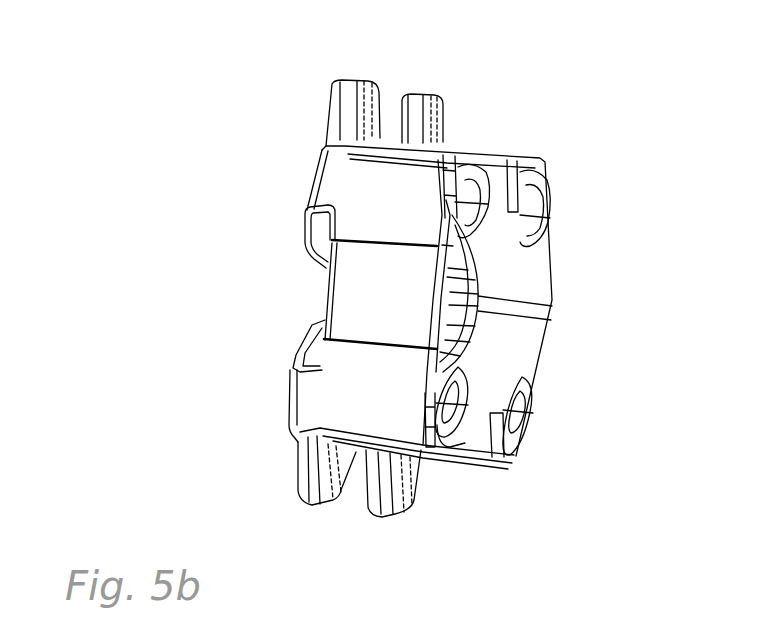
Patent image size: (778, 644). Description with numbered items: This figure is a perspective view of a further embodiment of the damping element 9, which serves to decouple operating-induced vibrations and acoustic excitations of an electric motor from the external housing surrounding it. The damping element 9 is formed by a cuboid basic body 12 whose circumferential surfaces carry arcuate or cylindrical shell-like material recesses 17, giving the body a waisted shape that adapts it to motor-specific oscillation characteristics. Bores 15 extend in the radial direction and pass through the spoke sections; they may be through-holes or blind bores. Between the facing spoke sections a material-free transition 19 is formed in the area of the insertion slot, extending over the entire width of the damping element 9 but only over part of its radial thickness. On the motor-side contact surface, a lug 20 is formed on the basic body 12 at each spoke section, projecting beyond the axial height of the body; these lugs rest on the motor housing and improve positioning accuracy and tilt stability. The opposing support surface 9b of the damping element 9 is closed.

The damping element 9 is at (222, 115).
The support surface 9b is at (540, 277).
The basic body 12 is at (327, 403).
The bores 15 is at (550, 215).
The material recesses 17 is at (452, 302).
The material-free transition 19 is at (320, 297).
The lug 20 is at (447, 110).